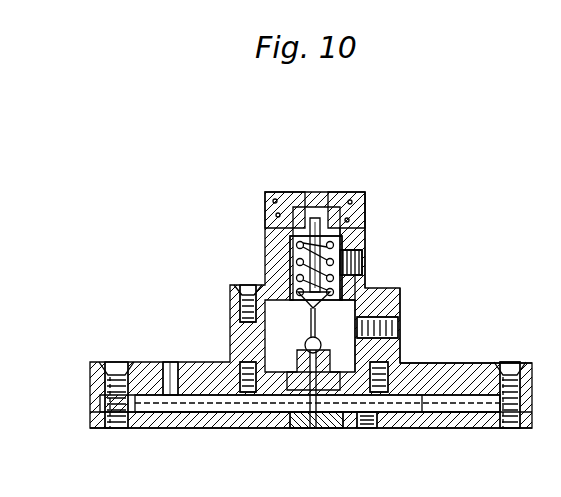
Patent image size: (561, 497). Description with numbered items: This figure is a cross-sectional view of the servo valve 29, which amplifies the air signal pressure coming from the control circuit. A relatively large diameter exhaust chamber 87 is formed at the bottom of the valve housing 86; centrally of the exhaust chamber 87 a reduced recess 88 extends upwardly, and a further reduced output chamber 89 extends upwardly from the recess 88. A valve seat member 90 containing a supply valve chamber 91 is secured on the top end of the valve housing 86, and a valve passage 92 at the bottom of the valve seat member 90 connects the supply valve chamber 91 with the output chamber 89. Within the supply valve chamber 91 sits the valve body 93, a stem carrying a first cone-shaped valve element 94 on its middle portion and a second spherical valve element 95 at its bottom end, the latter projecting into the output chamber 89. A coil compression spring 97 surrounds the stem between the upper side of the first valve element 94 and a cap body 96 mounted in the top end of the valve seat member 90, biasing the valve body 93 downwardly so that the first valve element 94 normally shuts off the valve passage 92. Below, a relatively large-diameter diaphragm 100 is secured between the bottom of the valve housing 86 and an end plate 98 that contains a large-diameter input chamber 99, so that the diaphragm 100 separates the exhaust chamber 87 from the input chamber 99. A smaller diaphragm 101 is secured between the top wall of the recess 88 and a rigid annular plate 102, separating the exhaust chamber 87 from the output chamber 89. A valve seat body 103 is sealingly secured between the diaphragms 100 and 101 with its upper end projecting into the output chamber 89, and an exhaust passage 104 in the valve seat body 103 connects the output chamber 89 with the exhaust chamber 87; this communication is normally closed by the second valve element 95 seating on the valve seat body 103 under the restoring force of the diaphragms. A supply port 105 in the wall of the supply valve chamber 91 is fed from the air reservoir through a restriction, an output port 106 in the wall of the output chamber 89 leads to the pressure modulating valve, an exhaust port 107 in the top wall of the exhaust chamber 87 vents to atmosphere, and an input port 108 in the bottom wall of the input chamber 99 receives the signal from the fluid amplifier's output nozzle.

The servo valve 29 is at (363, 195).
The valve housing 86 is at (238, 312).
The exhaust chamber 87 is at (453, 398).
The recess 88 is at (162, 428).
The output chamber 89 is at (250, 420).
The valve seat member 90 is at (355, 215).
The supply valve chamber 91 is at (290, 240).
The valve passage 92 is at (300, 295).
The valve body 93 is at (318, 240).
The first cone-shaped valve element 94 is at (298, 262).
The second spherical valve element 95 is at (304, 346).
The cap body 96 is at (297, 210).
The coil compression spring 97 is at (345, 240).
The end plate 98 is at (485, 420).
The input chamber 99 is at (420, 414).
The diaphragm 100 is at (205, 404).
The diaphragm 101 is at (380, 348).
The rigid annular plate 102 is at (402, 385).
The valve seat body 103 is at (318, 428).
The exhaust passage 104 is at (305, 396).
The supply port 105 is at (363, 262).
The output port 106 is at (392, 326).
The exhaust port 107 is at (170, 375).
The input port 108 is at (367, 428).